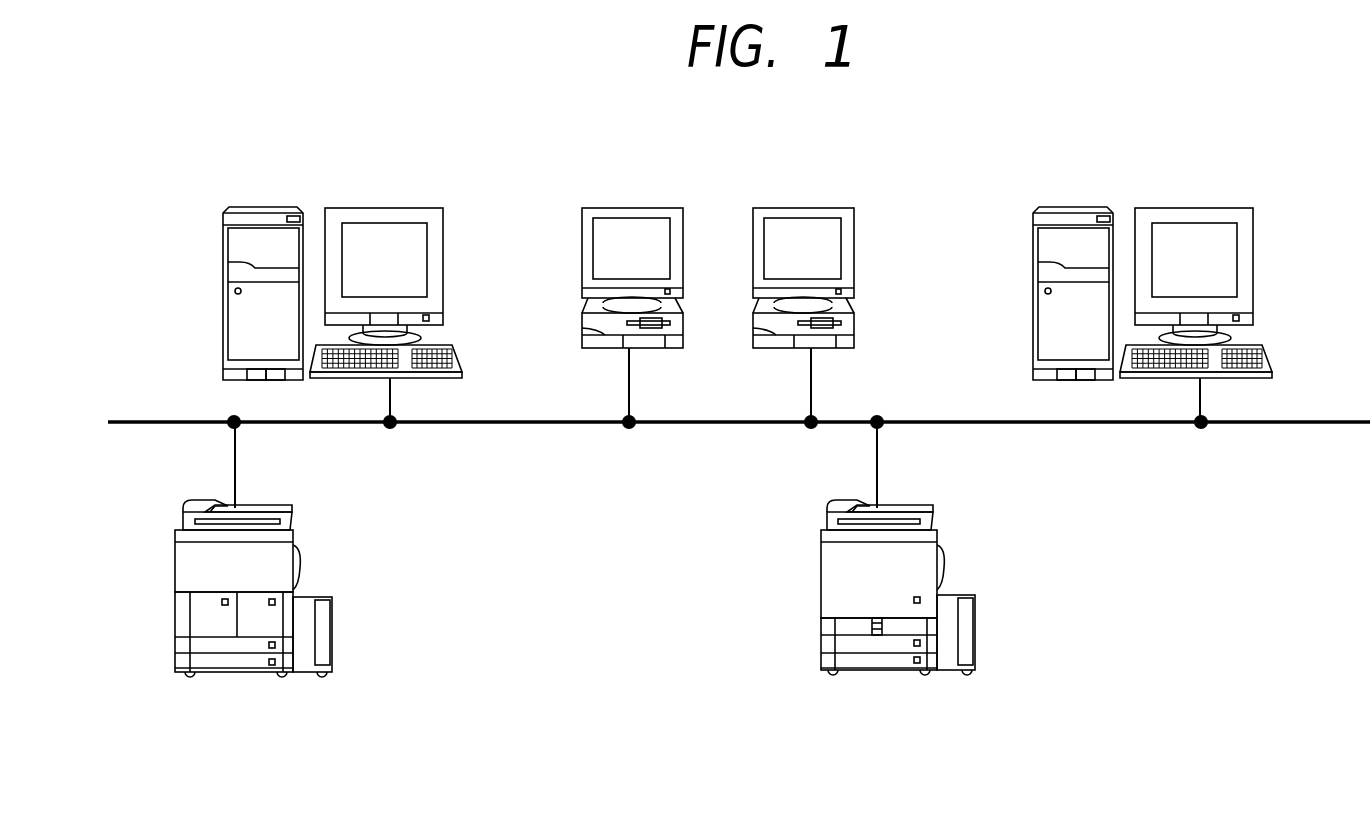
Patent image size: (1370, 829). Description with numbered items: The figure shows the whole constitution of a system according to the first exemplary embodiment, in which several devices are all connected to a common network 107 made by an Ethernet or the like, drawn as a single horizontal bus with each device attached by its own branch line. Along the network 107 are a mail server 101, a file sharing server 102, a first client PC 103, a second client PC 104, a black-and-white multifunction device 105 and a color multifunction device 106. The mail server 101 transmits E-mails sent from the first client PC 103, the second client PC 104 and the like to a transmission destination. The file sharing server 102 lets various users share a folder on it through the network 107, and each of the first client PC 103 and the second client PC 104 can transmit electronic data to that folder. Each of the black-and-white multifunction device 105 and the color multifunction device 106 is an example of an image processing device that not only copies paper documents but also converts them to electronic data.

The mail server 101 is at (383, 205).
The file sharing server 102 is at (1197, 205).
The client PC 1 103 is at (635, 206).
The client PC 2 104 is at (804, 206).
The black-and-white multifunction device 105 is at (245, 676).
The color multifunction device 106 is at (882, 673).
The network 107 is at (162, 420).